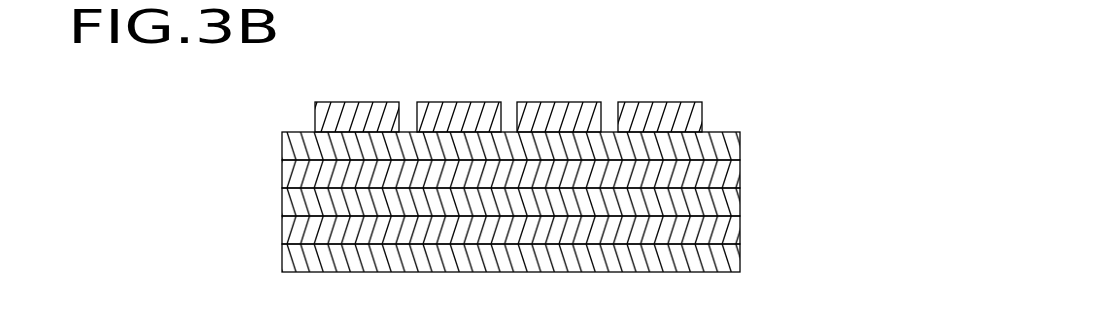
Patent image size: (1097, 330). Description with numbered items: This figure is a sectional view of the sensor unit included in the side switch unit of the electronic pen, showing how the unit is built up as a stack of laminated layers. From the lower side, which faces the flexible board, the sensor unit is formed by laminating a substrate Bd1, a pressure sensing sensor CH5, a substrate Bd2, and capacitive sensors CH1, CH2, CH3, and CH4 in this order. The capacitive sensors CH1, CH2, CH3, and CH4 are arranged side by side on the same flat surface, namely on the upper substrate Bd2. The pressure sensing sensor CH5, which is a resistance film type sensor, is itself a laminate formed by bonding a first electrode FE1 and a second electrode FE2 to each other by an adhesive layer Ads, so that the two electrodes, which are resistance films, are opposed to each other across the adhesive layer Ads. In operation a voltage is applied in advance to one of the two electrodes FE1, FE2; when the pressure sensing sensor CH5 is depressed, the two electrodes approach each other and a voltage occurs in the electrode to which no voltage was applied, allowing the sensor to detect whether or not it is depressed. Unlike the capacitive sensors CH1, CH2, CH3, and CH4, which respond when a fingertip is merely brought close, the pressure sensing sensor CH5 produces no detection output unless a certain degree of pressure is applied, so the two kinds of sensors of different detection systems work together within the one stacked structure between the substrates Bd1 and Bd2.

The capacitive sensor CH1 is at (355, 100).
The capacitive sensor CH2 is at (453, 100).
The capacitive sensor CH3 is at (568, 100).
The capacitive sensor CH4 is at (655, 100).
The pressure sensing sensor CH5 is at (747, 163).
The substrate Bd2 is at (742, 145).
The substrate Bd1 is at (742, 257).
The second electrode FE2 is at (282, 174).
The adhesive layer Ads is at (282, 202).
The first electrode FE1 is at (282, 232).